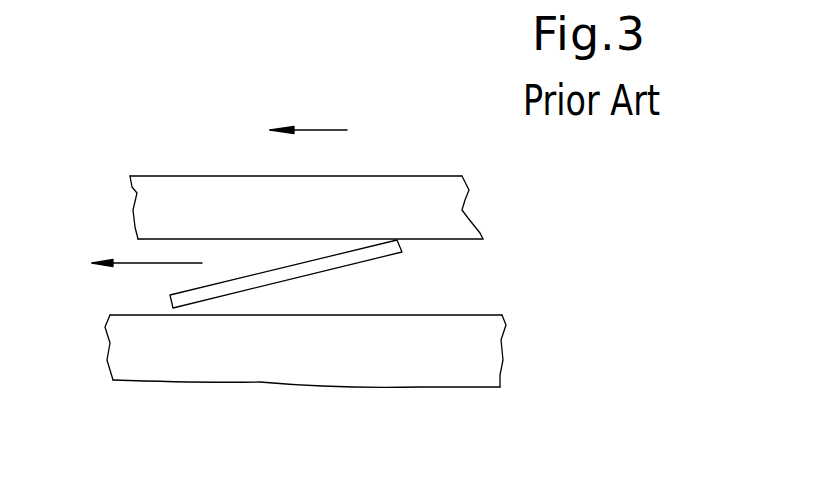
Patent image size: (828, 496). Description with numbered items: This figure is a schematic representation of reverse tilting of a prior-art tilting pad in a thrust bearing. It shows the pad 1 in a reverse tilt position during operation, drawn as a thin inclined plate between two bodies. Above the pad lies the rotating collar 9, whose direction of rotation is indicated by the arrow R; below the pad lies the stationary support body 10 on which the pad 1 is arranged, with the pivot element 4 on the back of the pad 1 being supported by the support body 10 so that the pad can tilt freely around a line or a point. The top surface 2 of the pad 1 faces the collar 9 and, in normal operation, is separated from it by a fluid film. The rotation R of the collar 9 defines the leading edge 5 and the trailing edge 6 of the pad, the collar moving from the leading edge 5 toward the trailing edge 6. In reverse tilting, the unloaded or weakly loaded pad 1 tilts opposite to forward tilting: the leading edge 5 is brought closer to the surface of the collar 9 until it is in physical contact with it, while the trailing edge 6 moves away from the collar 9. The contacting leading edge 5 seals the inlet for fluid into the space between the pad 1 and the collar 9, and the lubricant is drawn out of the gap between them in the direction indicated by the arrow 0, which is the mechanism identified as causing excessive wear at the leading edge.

The collar 9 is at (420, 187).
The stationary support body 10 is at (485, 347).
The leading edge 5 is at (407, 243).
The top surface 2 is at (272, 272).
The pad 1 is at (331, 271).
The pivot element 4 is at (236, 293).
The trailing edge 6 is at (170, 298).
The arrow D' (fluid drawn out of gap) 0 is at (142, 262).
The rotation of the collar R is at (327, 129).